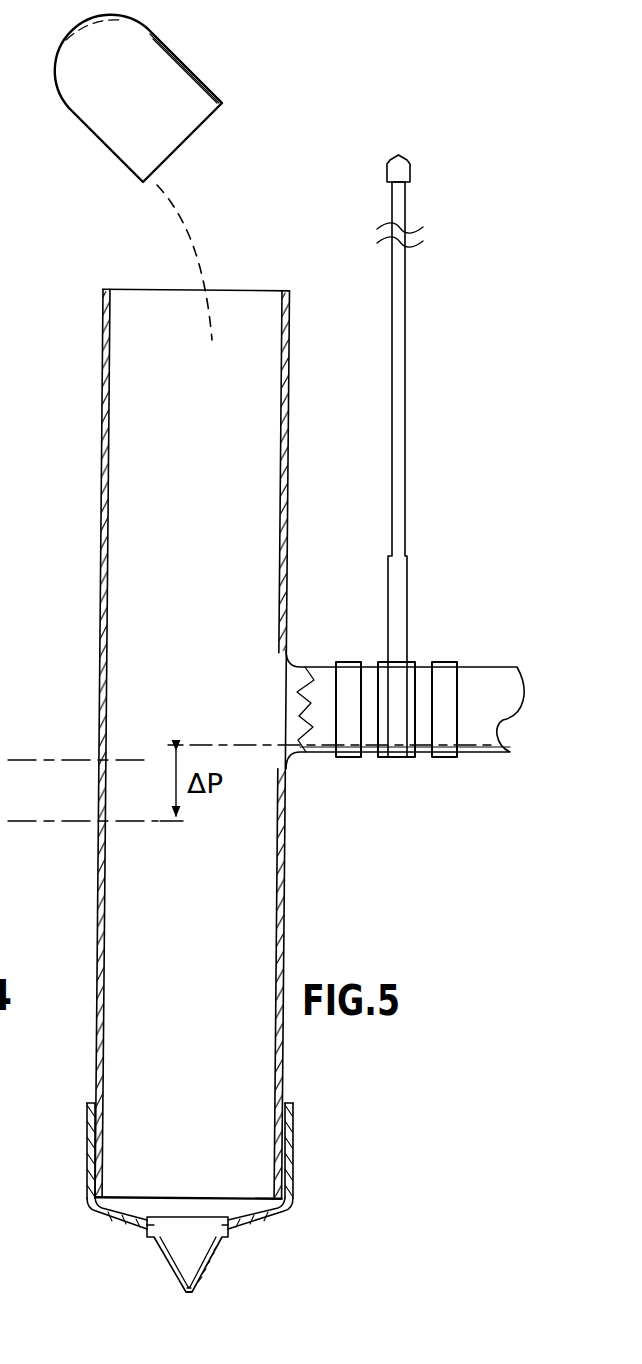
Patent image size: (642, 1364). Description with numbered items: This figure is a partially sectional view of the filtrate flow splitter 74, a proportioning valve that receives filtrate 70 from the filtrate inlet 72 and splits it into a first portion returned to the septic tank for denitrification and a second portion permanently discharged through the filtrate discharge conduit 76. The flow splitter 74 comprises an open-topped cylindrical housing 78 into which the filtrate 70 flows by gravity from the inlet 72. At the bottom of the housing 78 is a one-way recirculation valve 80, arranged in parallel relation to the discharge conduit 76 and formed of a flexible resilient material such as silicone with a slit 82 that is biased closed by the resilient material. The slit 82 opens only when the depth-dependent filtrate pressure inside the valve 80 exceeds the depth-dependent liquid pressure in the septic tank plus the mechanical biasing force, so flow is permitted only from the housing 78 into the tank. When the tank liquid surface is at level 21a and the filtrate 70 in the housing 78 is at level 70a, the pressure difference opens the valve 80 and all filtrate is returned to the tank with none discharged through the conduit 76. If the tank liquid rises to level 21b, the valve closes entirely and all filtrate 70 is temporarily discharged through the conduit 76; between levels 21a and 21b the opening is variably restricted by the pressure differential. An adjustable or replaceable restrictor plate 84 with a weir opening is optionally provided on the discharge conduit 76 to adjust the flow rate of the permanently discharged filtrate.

The filtrate 70 is at (196, 254).
The filtrate level 70a is at (222, 742).
The filtrate inlet 72 is at (200, 78).
The filtrate flow splitter 74 is at (153, 744).
The filtrate discharge conduit 76 is at (477, 665).
The cylindrical housing 78 is at (102, 379).
The one-way recirculation valve 80 is at (212, 1263).
The slit 82 is at (187, 1297).
The restrictor plate 84 is at (407, 585).
The liquid level 21a is at (30, 826).
The liquid level 21b is at (31, 757).